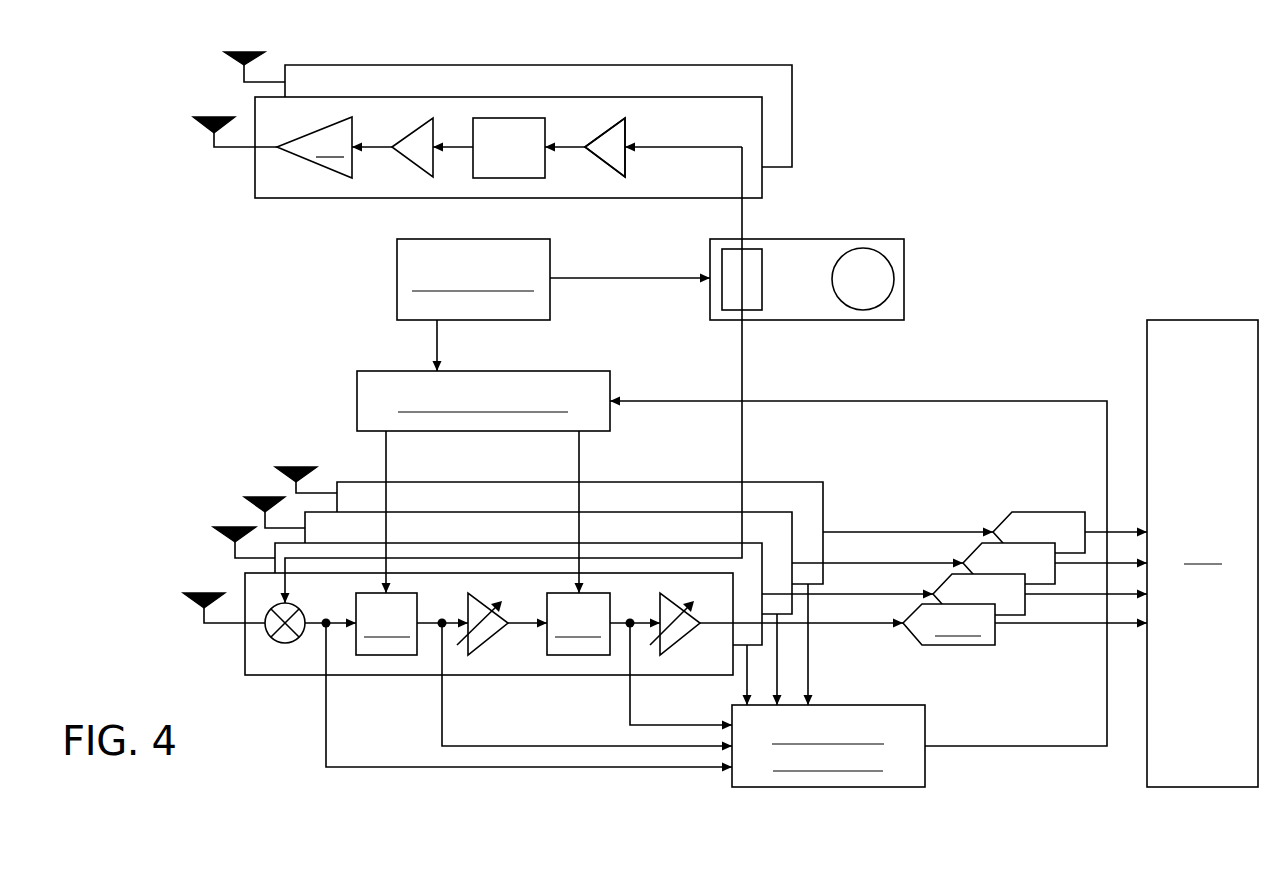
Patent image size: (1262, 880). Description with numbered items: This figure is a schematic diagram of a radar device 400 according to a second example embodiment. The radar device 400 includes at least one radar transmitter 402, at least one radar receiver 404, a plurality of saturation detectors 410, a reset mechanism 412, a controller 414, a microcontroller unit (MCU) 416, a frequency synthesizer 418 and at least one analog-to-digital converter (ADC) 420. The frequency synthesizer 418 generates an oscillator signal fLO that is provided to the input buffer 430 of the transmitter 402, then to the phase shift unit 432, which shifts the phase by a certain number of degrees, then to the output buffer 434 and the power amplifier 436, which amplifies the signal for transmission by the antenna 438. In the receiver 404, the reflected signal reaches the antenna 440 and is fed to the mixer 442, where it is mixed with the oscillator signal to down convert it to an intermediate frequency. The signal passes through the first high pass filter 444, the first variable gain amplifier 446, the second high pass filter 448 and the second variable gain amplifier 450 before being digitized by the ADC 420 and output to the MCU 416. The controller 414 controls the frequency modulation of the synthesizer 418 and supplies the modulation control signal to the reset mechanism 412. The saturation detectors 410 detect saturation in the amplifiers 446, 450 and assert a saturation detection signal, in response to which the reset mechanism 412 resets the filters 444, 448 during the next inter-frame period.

The radar device 400 is at (265, 782).
The radar transmitter 402 is at (762, 182).
The radar receiver 404 is at (243, 660).
The saturation detectors 410 is at (925, 708).
The reset mechanism 412 is at (357, 424).
The controller 414 is at (550, 303).
The microcontroller unit (MCU) 416 is at (1200, 320).
The frequency synthesizer 418 is at (904, 275).
The analog-to-digital converter (ADC) 420 is at (1042, 512).
The input buffer 430 is at (627, 120).
The phase shift unit 432 is at (547, 120).
The output buffer 434 is at (434, 120).
The power amplifier 436 is at (318, 136).
The antenna 438 is at (202, 116).
The antenna 440 is at (184, 604).
The mixer 442 is at (309, 634).
The first high pass filter 444 is at (351, 618).
The first variable gain amplifier 446 is at (468, 598).
The second high pass filter 448 is at (545, 608).
The second variable gain amplifier 450 is at (658, 608).